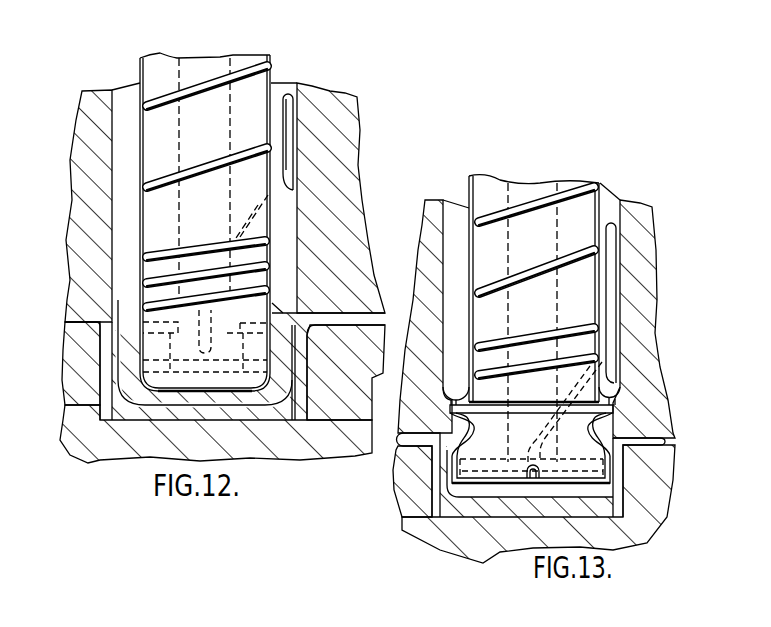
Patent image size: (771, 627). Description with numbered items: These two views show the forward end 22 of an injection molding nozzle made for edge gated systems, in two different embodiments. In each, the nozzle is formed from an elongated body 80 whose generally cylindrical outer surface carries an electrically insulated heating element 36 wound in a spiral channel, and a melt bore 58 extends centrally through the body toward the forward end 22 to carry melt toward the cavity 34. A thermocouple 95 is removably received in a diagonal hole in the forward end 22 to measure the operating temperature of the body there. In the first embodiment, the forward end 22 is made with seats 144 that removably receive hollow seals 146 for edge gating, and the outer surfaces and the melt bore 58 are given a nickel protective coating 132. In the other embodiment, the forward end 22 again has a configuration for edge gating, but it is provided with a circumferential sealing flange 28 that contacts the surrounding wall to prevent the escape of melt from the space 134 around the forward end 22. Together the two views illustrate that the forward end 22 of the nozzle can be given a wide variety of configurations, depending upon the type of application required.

In FIG. 12, the forward end 22 is at (187, 386).
In FIG. 13, the forward end 22 is at (483, 474).
In FIG. 13, the circumferential sealing flange 28 is at (640, 330).
In FIG. 12, the cavity 34 is at (100, 402).
In FIG. 13, the cavity 34 is at (645, 548).
In FIG. 13, the electrically insulated heating element 36 is at (595, 255).
In FIG. 12, the melt bore 58 is at (212, 127).
In FIG. 13, the elongated body 80 is at (585, 212).
In FIG. 13, the thermocouple 95 is at (612, 282).
In FIG. 12, the nickel protective coating 132 is at (138, 235).
In FIG. 13, the space 134 is at (637, 378).
In FIG. 12, the seats 144 is at (188, 377).
In FIG. 12, the hollow seals 146 is at (100, 322).